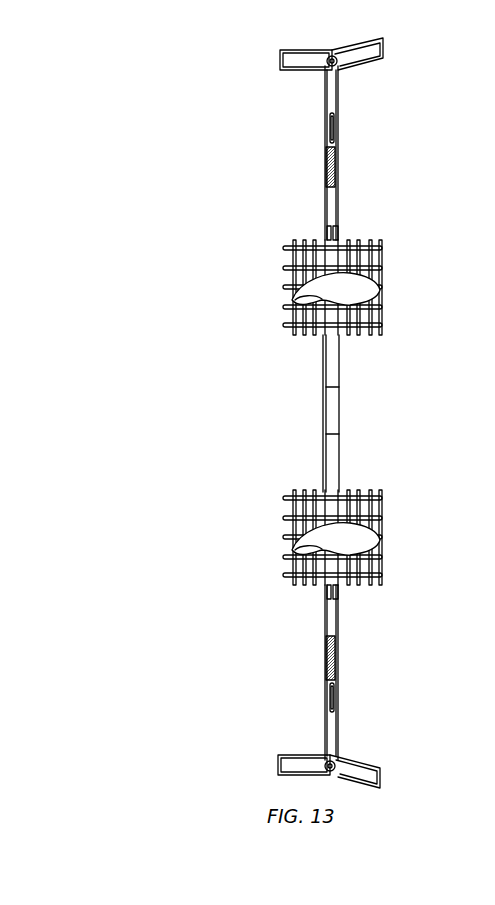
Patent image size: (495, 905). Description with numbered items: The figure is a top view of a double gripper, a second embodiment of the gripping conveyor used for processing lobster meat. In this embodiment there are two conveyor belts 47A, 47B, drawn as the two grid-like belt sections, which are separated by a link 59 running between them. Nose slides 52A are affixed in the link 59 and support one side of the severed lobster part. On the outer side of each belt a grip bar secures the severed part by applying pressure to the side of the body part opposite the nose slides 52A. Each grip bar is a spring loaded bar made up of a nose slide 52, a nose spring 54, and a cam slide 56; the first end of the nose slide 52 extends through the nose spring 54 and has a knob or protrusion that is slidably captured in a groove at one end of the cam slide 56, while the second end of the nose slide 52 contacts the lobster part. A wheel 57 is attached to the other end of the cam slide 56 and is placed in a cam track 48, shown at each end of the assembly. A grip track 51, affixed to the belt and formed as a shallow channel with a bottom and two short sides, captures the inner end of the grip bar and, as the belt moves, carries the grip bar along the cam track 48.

The conveyor belt 47A is at (383, 281).
The conveyor belt 47B is at (383, 531).
The cam track 48 is at (373, 55).
The grip track 51 is at (334, 131).
The nose slide 52 is at (334, 220).
The nose slide 52A is at (334, 373).
The nose spring 54 is at (334, 171).
The cam slide 56 is at (334, 105).
The wheel 57 is at (327, 61).
The link 59 is at (331, 413).